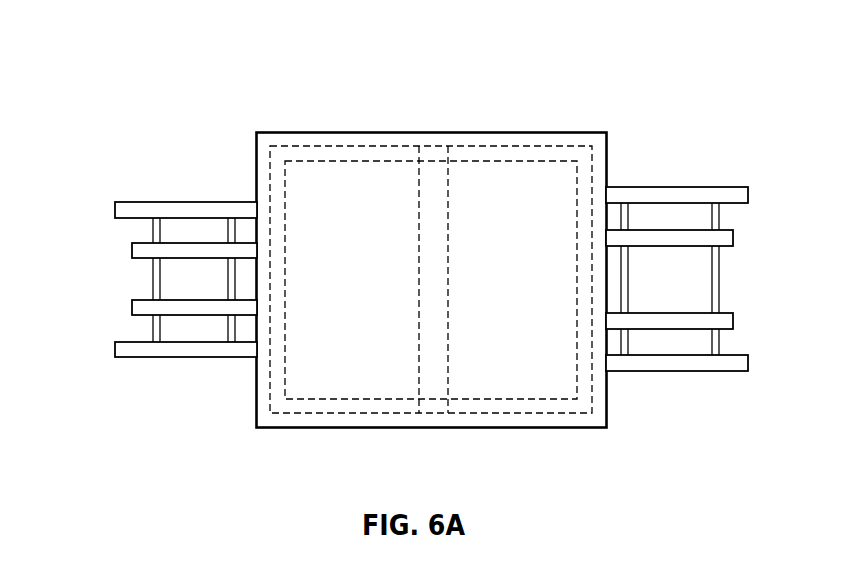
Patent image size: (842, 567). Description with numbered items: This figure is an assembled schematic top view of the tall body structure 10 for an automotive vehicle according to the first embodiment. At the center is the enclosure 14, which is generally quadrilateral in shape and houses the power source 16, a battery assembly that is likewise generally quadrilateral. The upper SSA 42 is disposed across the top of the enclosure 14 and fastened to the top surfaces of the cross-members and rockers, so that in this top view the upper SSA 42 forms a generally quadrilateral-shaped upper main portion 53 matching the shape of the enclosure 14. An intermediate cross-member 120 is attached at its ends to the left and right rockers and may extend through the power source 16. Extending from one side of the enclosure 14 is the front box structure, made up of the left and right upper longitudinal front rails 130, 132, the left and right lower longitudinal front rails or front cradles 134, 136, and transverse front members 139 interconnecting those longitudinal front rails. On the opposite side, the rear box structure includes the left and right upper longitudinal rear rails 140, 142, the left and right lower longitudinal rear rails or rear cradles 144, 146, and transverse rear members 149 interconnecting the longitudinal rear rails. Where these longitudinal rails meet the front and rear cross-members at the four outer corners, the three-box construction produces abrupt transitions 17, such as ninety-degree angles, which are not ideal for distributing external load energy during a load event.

The tall body structure 10 is at (175, 82).
The enclosure 14 is at (357, 88).
The power source 16 is at (415, 163).
The abrupt transitions 17 is at (245, 193).
The intermediate cross-member 120 is at (430, 315).
The upper SSA 42 is at (519, 273).
The upper main portion 53 is at (548, 284).
The left upper longitudinal front rail 130 is at (116, 352).
The right upper longitudinal front rail 132 is at (116, 212).
The left lower longitudinal front rail 134 is at (133, 308).
The right lower longitudinal front rail 136 is at (133, 251).
The transverse front members 139 is at (228, 233).
The left upper longitudinal rear rail 140 is at (745, 366).
The right upper longitudinal rear rail 142 is at (745, 196).
The left lower longitudinal rear rail 144 is at (733, 321).
The right lower longitudinal rear rail 146 is at (733, 238).
The transverse rear members 149 is at (716, 278).